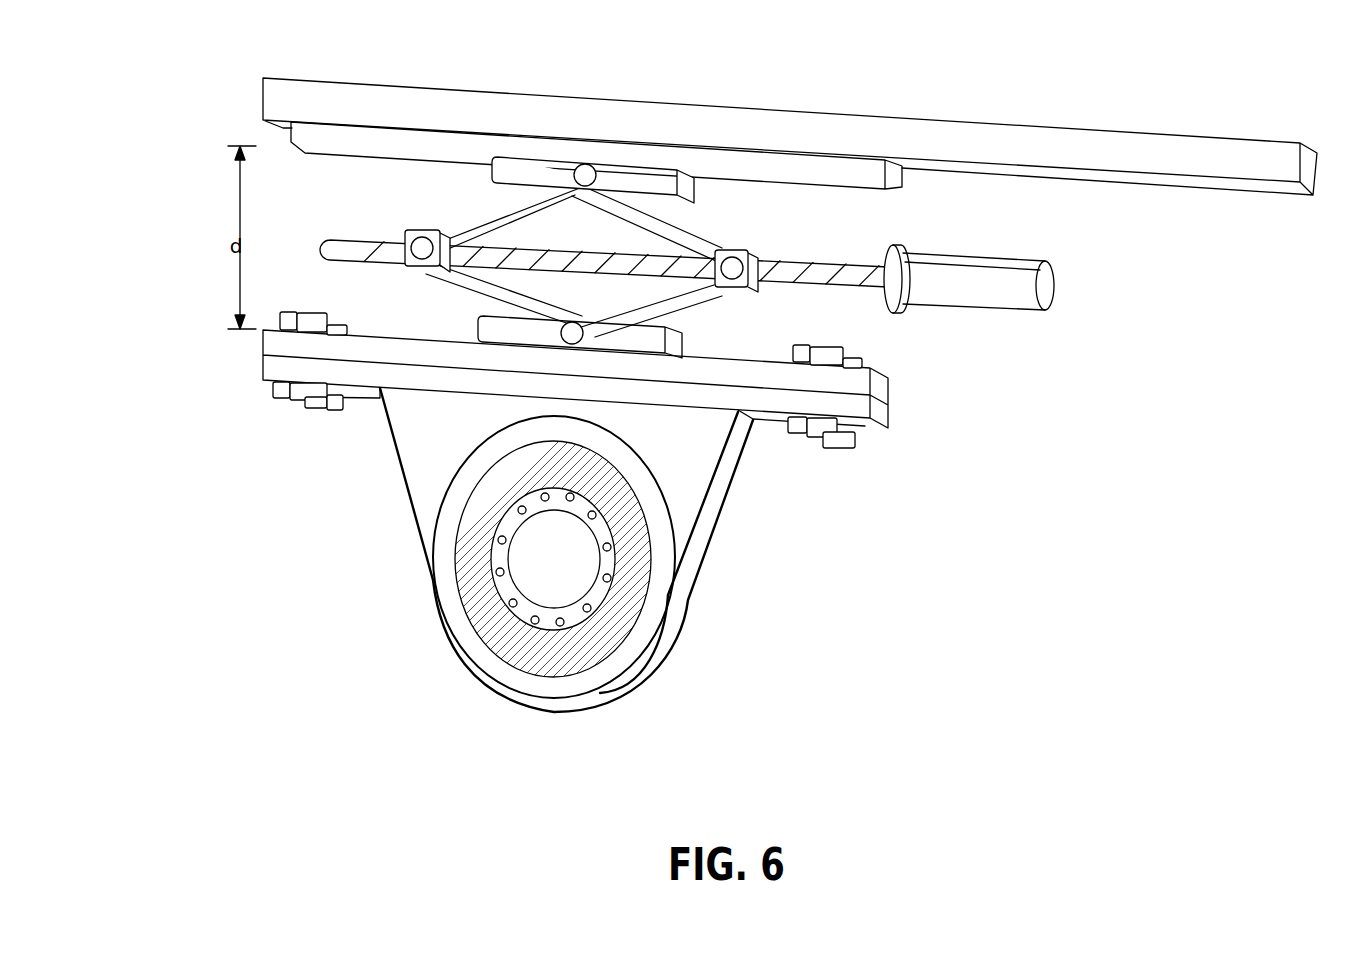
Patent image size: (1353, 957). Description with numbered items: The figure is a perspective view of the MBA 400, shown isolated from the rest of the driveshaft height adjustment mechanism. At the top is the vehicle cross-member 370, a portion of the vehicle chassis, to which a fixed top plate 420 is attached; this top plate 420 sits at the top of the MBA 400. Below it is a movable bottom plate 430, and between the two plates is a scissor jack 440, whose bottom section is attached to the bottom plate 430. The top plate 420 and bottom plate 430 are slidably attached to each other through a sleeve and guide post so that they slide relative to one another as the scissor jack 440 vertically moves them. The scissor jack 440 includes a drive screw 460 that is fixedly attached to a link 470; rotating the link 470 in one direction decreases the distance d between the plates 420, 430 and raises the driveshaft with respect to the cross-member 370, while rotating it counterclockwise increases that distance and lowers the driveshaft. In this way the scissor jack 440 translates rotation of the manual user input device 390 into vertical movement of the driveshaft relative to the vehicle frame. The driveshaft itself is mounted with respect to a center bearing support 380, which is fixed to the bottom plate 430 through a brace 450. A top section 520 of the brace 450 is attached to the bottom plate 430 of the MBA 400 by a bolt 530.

The vehicle cross-member 370 is at (1097, 143).
The center bearing support 380 is at (563, 692).
The manual user input device 390 is at (572, 576).
The MBA 400 is at (182, 47).
The top plate 420 is at (833, 170).
The bottom plate 430 is at (880, 391).
The scissor jack 440 is at (1145, 192).
The brace 450 is at (425, 502).
The drive screw 460 is at (855, 288).
The link 470 is at (983, 263).
The top section 520 is at (768, 400).
The bolt 530 is at (292, 403).